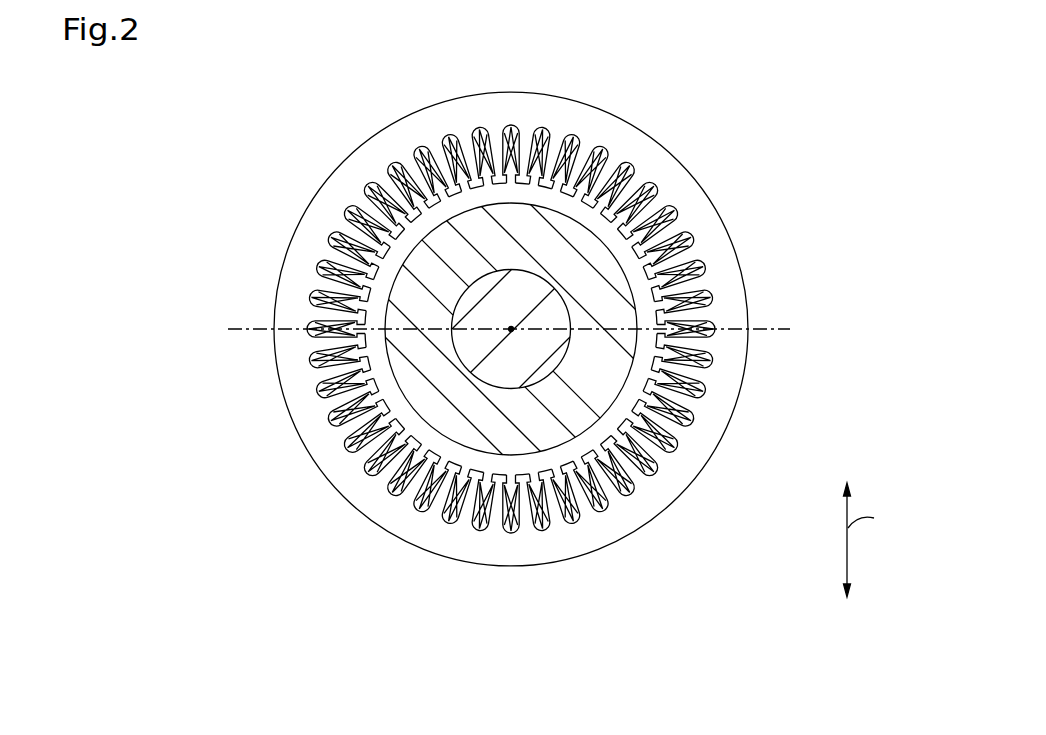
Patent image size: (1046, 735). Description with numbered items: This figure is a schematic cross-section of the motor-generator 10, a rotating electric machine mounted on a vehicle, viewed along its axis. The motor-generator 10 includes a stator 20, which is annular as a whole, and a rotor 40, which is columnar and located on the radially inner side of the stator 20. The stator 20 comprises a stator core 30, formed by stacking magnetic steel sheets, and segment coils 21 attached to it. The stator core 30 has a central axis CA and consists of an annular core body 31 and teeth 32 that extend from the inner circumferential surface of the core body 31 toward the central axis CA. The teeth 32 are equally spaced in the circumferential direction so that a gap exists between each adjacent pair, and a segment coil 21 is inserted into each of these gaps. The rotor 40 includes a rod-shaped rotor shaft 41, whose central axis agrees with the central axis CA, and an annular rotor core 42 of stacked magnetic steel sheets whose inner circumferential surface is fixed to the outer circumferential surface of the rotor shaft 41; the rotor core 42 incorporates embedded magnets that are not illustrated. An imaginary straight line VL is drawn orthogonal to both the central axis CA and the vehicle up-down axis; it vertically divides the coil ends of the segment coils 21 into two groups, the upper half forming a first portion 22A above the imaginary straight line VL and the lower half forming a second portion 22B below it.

The motor-generator 10 is at (768, 113).
The stator 20 is at (333, 145).
The segment coil 21 is at (443, 158).
The first portion 22A is at (275, 188).
The second portion 22B is at (273, 472).
The stator core 30 is at (732, 197).
The core body 31 is at (450, 115).
The teeth 32 is at (645, 215).
The rotor 40 is at (647, 382).
The rotor shaft 41 is at (570, 331).
The rotor core 42 is at (562, 363).
The central axis CA is at (511, 326).
The imaginary straight line VL is at (493, 330).